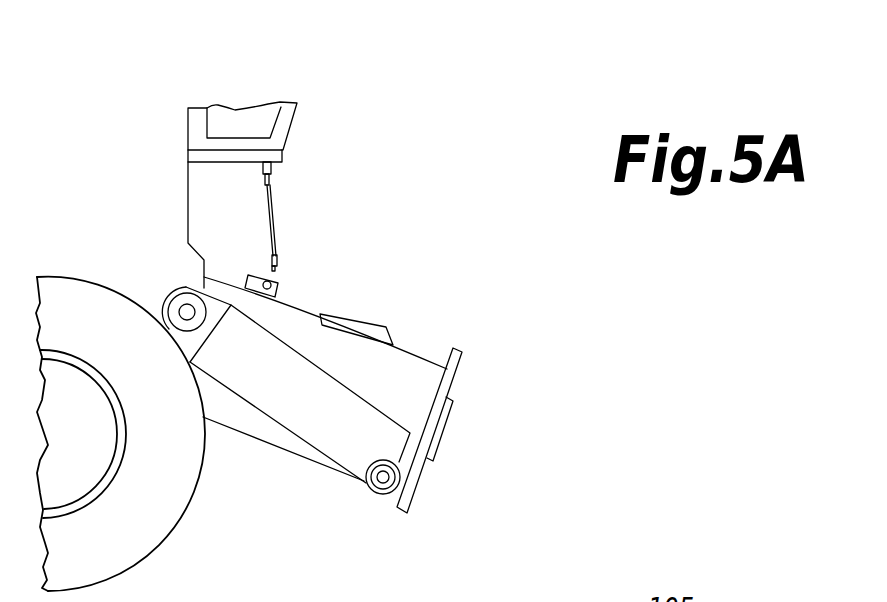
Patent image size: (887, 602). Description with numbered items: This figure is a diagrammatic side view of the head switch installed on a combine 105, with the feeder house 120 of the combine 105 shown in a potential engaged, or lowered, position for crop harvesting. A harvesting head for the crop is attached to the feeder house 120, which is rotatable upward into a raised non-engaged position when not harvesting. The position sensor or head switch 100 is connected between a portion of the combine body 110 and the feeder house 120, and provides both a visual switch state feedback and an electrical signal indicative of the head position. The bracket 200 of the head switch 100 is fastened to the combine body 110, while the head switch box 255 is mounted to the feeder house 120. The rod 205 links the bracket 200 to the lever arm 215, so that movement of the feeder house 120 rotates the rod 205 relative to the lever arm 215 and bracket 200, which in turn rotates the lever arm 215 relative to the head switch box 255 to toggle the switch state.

The combine 105 is at (198, 82).
The combine body 110 is at (289, 131).
The bracket 200 is at (273, 168).
The rod 205 is at (277, 227).
The lever arm 215 is at (280, 276).
The head switch box 255 is at (250, 276).
The position sensor 100 is at (292, 258).
The feeder house 120 is at (395, 360).